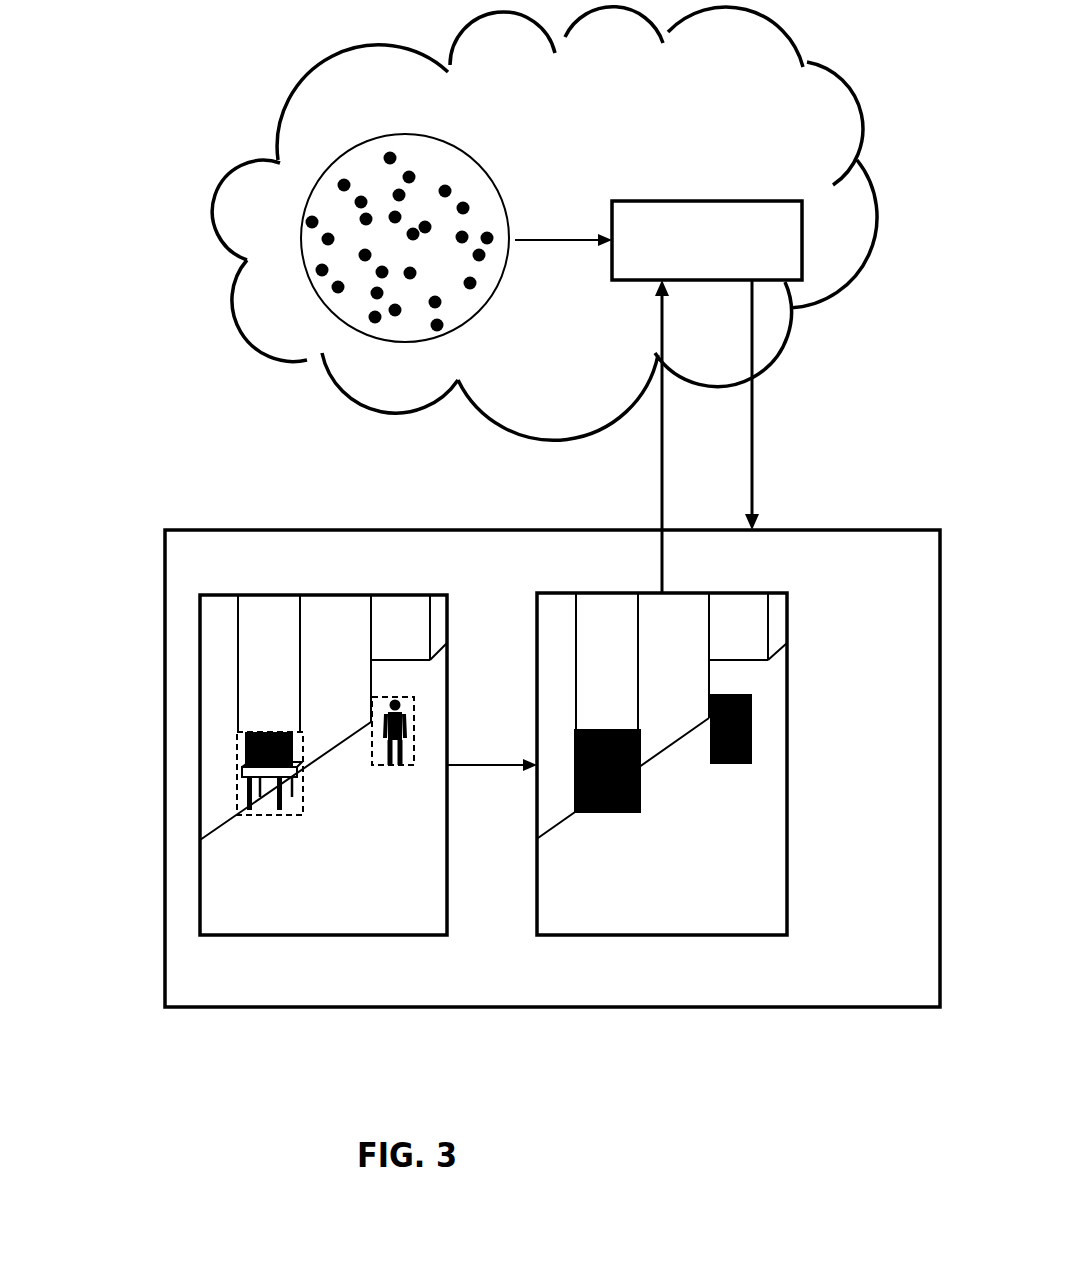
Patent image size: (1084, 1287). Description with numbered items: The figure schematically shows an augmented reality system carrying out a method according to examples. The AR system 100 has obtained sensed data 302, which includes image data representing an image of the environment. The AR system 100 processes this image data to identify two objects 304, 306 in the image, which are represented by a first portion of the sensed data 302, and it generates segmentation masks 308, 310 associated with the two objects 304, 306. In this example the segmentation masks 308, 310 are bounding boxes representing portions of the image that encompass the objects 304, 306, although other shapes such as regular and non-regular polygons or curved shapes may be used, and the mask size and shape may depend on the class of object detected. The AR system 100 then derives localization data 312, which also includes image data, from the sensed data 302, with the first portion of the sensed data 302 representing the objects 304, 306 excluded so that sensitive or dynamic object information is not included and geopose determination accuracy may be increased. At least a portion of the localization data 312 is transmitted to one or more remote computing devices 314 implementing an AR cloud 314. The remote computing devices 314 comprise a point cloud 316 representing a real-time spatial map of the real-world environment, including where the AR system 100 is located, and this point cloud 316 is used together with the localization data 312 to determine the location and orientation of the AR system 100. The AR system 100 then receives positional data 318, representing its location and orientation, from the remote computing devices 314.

The AR system 100 is at (187, 528).
The sensed data 302 is at (270, 593).
The object 304 is at (238, 752).
The object 306 is at (413, 760).
The segmentation mask 308 is at (240, 798).
The segmentation mask 310 is at (417, 715).
The localization data 312 is at (555, 592).
The remote computing devices 314 is at (815, 62).
The point cloud 316 is at (337, 157).
The positional data 318 is at (650, 200).